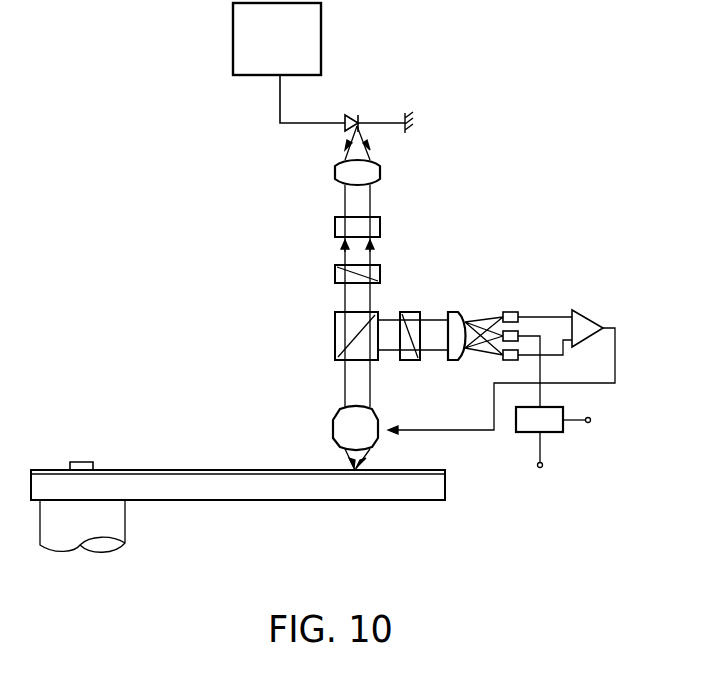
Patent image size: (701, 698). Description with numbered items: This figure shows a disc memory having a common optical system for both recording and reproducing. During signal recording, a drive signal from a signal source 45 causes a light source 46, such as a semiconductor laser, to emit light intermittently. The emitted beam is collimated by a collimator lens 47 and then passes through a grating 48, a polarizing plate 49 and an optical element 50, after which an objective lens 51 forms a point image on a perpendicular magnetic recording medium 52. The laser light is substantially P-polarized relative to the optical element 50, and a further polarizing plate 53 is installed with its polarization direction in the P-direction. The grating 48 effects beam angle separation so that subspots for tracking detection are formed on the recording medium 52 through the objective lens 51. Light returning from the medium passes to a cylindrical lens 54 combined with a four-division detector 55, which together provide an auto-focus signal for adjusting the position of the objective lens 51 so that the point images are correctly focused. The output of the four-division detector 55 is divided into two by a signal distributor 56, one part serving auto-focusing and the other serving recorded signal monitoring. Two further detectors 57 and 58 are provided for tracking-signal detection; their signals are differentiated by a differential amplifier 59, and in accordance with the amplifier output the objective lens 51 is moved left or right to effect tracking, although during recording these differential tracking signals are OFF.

The signal source 45 is at (321, 19).
The light source 46 is at (358, 117).
The collimator lens 47 is at (383, 172).
The grating 48 is at (382, 226).
The polarizing plate 49 is at (382, 272).
The optical element 50 is at (335, 345).
The objective lens 51 is at (333, 433).
The perpendicular magnetic recording medium 52 is at (446, 485).
The polarizing plate 53 is at (418, 310).
The cylindrical lens 54 is at (462, 312).
The four-division detector 55 is at (518, 333).
The signal distributor 56 is at (556, 432).
The detector 57 is at (512, 311).
The detector 58 is at (510, 362).
The differential amplifier 59 is at (595, 314).